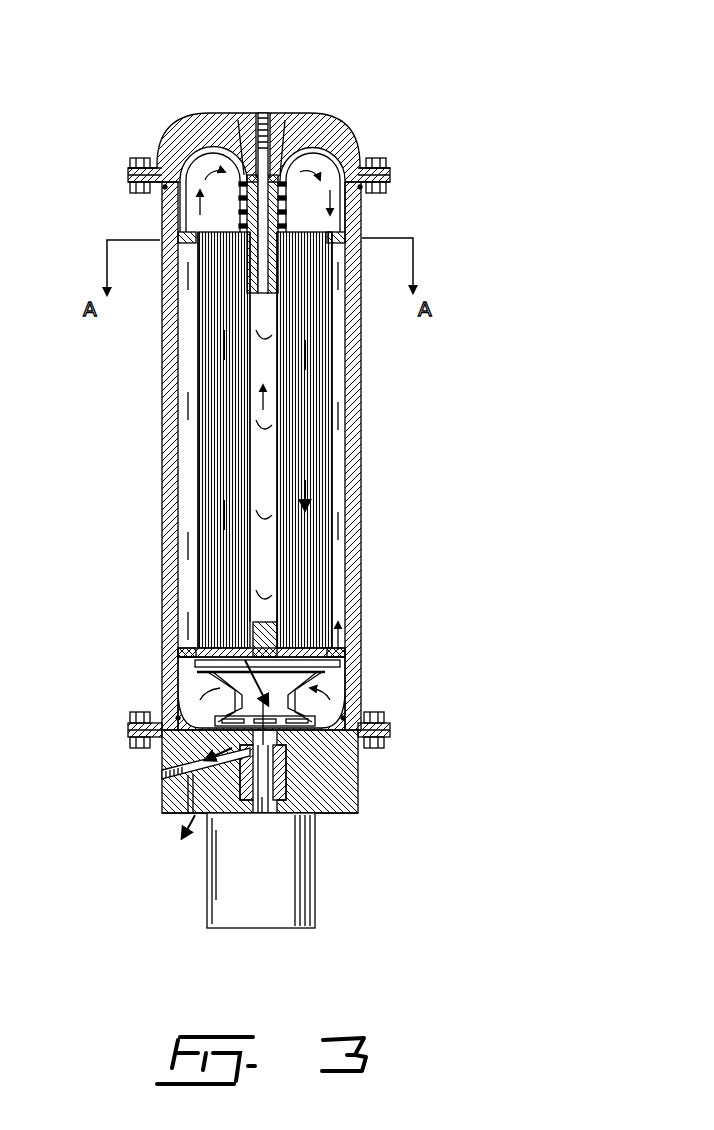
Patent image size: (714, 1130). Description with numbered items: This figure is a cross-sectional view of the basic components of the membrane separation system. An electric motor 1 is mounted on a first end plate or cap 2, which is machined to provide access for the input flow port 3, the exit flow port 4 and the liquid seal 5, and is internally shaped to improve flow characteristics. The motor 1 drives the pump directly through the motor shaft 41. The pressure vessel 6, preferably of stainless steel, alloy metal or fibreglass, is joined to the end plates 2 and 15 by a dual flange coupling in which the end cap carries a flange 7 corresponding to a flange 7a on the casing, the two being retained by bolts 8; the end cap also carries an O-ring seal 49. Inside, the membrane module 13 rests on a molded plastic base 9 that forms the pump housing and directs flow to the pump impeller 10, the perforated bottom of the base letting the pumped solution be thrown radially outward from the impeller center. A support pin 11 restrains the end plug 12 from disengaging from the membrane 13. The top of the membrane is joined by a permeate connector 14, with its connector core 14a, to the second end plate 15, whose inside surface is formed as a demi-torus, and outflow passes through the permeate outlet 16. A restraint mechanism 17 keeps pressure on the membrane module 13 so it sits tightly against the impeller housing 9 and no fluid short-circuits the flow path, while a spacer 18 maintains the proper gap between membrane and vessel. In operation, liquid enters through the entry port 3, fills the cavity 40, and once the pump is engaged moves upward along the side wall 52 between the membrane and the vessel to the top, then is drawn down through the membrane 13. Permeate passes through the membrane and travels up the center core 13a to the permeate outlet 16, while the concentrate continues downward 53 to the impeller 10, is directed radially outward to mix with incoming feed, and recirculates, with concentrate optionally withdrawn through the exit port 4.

The electric motor 1 is at (215, 873).
The first end plate 2 is at (360, 795).
The input flow port 3 is at (335, 815).
The exit flow port 4 is at (178, 812).
The liquid seal 5 is at (277, 762).
The pressure vessel 6 is at (362, 494).
The flange 7 is at (393, 172).
The casing flange 7a is at (393, 180).
The bolts 8 is at (378, 160).
The molded plastic base 9 is at (338, 647).
The pump impeller 10 is at (345, 716).
The support pin 11 is at (192, 668).
The end plug 12 is at (270, 612).
The membrane module 13 is at (340, 472).
The center tube or core 13a is at (265, 390).
The permeate connector 14 is at (296, 215).
The connector core 14a is at (288, 140).
The second end plate 15 is at (222, 112).
The permeate outlet 16 is at (264, 112).
The restraint mechanism 17 is at (240, 210).
The spacer 18 is at (185, 240).
The cavity 40 is at (205, 685).
The motor shaft 41 is at (263, 797).
The O-ring seal 49 is at (181, 230).
The side wall flow path 52 is at (352, 418).
The downward flow 53 is at (300, 345).